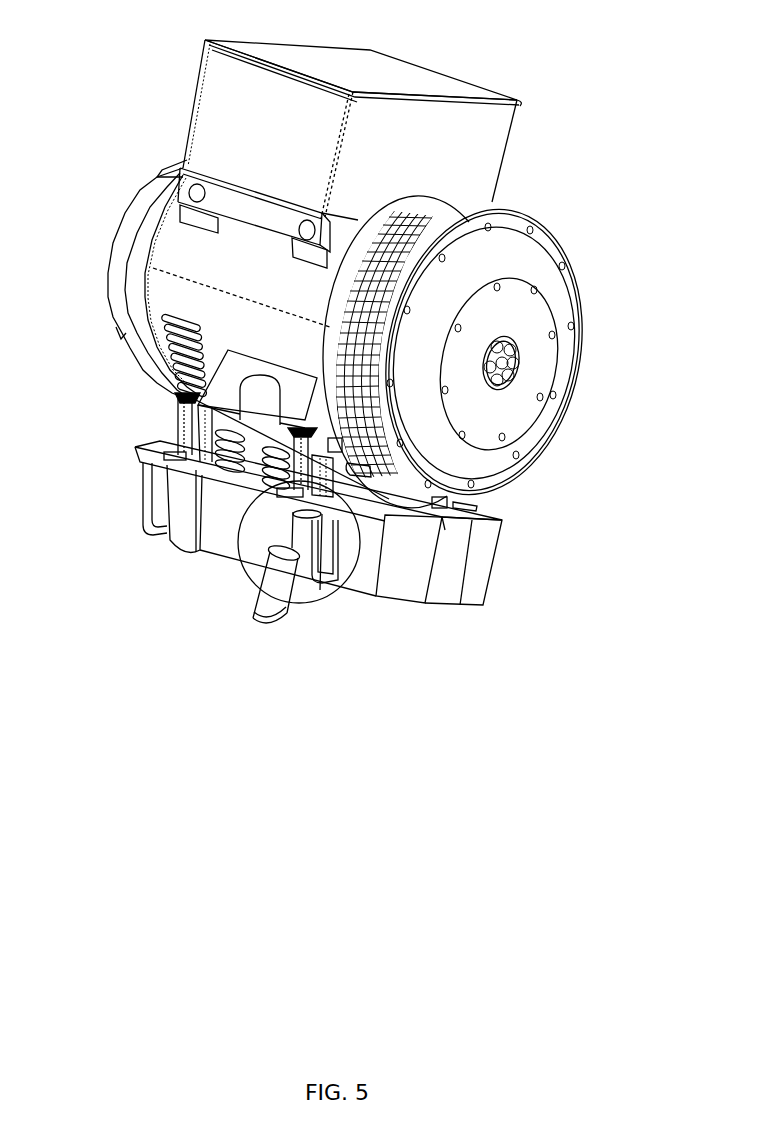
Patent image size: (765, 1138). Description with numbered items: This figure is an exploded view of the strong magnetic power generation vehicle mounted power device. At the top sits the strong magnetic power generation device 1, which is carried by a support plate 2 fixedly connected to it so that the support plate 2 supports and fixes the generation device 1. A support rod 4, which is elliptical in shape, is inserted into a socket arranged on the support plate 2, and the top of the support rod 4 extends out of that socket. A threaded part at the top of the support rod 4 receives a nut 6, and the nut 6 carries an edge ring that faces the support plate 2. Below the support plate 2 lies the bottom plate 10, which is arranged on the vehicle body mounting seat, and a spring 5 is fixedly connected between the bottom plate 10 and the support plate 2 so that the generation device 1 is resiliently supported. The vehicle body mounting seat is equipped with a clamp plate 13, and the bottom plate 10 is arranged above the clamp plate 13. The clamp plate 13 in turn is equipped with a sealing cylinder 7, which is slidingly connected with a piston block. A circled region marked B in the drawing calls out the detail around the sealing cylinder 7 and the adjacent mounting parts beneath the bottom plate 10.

The strong magnetic power generation device 1 is at (533, 327).
The support plate 2 is at (230, 367).
The support rod 4 is at (232, 418).
The spring 5 is at (230, 470).
The nut 6 is at (380, 440).
The sealing cylinder 7 is at (185, 521).
The bottom plate 10 is at (483, 527).
The clamp plate 13 is at (480, 572).
The detail region B is at (348, 578).